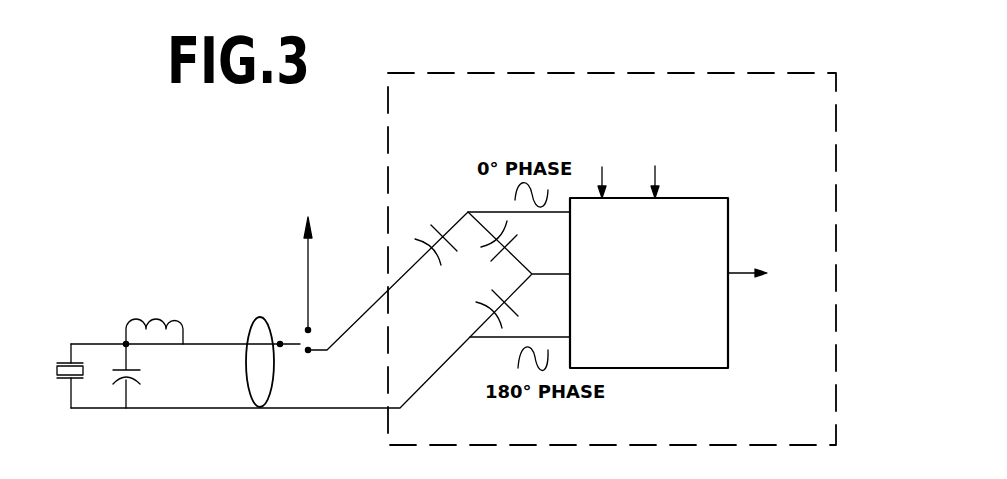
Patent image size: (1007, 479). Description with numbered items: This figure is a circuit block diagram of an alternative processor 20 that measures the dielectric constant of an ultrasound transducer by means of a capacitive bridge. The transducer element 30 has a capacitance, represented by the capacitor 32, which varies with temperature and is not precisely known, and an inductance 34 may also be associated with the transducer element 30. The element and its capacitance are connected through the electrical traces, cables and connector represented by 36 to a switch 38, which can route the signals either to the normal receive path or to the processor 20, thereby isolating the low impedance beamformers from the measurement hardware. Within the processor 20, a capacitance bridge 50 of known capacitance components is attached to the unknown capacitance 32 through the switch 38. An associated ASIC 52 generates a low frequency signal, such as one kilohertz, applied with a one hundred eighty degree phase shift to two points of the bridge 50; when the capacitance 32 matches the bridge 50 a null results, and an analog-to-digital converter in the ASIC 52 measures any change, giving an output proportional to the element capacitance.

The processor 20 is at (543, 73).
The transducer element 30 is at (56, 362).
The capacitor 32 is at (141, 376).
The inductance 34 is at (167, 320).
The electrical traces, cables and connector 36 is at (247, 390).
The switch 38 is at (293, 333).
The capacitance bridge 50 is at (445, 220).
The ASIC 52 is at (692, 198).